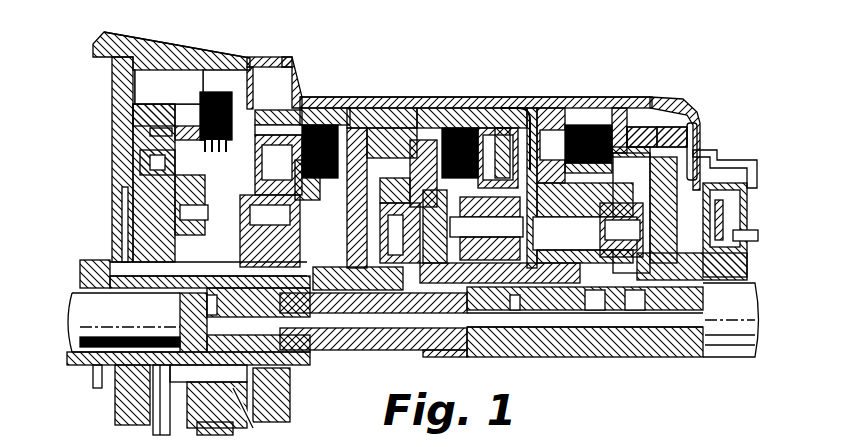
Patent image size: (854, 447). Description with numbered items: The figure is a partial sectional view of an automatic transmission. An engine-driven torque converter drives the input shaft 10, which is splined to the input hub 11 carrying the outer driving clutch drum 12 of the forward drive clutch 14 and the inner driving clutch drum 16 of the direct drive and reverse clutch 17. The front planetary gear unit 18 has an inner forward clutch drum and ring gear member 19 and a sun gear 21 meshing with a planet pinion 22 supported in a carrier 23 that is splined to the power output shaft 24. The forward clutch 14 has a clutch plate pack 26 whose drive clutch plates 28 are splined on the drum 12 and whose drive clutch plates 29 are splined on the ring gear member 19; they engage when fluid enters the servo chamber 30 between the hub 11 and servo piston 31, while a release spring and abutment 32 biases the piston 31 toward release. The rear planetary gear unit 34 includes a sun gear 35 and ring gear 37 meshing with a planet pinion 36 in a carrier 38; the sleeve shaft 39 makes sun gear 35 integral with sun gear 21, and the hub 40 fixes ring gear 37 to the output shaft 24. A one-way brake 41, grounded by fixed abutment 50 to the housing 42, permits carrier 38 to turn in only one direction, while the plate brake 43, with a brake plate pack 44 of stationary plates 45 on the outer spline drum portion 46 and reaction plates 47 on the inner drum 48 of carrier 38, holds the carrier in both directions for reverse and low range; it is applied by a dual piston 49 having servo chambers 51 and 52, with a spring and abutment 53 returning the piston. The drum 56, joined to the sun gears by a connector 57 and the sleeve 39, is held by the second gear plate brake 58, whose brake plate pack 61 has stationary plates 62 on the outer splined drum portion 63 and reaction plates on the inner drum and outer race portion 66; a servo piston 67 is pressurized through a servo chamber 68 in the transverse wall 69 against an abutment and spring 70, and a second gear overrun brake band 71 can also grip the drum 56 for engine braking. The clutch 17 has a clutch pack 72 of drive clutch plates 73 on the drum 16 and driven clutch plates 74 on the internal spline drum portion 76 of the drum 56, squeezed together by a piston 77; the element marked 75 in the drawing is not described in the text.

The input shaft 10 is at (88, 305).
The input hub 11 is at (345, 348).
The outer driving clutch drum 12 is at (380, 108).
The forward drive clutch 14 is at (490, 108).
The inner driving clutch drum 16 is at (262, 212).
The direct drive and reverse clutch 17 is at (330, 125).
The front planetary gear unit 18 is at (500, 125).
The inner forward clutch drum and ring gear member 19 is at (527, 105).
The sun gear 21 is at (533, 300).
The planet pinion 22 is at (512, 300).
The carrier 23 is at (490, 300).
The power output shaft 24 is at (572, 340).
The clutch plate pack 26 is at (445, 108).
The drive clutch plates 28 is at (430, 110).
The drive clutch plates 29 is at (460, 128).
The servo chamber 30 is at (405, 192).
The servo piston 31 is at (480, 195).
The release spring and abutment 32 is at (405, 217).
The rear planetary gear unit 34 is at (652, 98).
The sun gear 35 is at (636, 300).
The planet pinion 36 is at (621, 230).
The ring gear 37 is at (650, 192).
The carrier 38 is at (677, 205).
The sleeve shaft 39 is at (596, 300).
The hub 40 is at (695, 288).
The one-way brake 41 is at (560, 222).
The housing 42 is at (534, 108).
The plate brake 43 is at (625, 120).
The brake plate pack 44 is at (615, 110).
The stationary plates 45 is at (578, 125).
The outer spline drum portion 46 is at (556, 120).
The reaction plates 47 is at (590, 125).
The inner drum 48 is at (660, 125).
The dual piston 49 is at (680, 128).
The fixed abutment 50 is at (515, 128).
The servo chamber 51 is at (748, 232).
The servo chamber 52 is at (698, 140).
The spring and abutment 53 is at (705, 165).
The drum 56 is at (262, 66).
The connector 57 is at (403, 105).
The second gear plate brake 58 is at (205, 90).
The brake plate pack 61 is at (222, 90).
The stationary plates 62 is at (145, 82).
The outer splined drum portion 63 is at (142, 62).
The inner drum and outer race portion 66 is at (178, 192).
The servo piston 67 is at (135, 115).
The servo chamber 68 is at (142, 165).
The transverse wall 69 is at (112, 152).
The abutment and spring 70 is at (150, 134).
The second gear overrun brake band 71 is at (302, 100).
The clutch pack 72 is at (315, 98).
The drive clutch plates 73 is at (200, 212).
The driven clutch plates 74 is at (360, 108).
The hub 75 is at (298, 180).
The internal spline drum portion 76 is at (328, 108).
The piston 77 is at (300, 112).